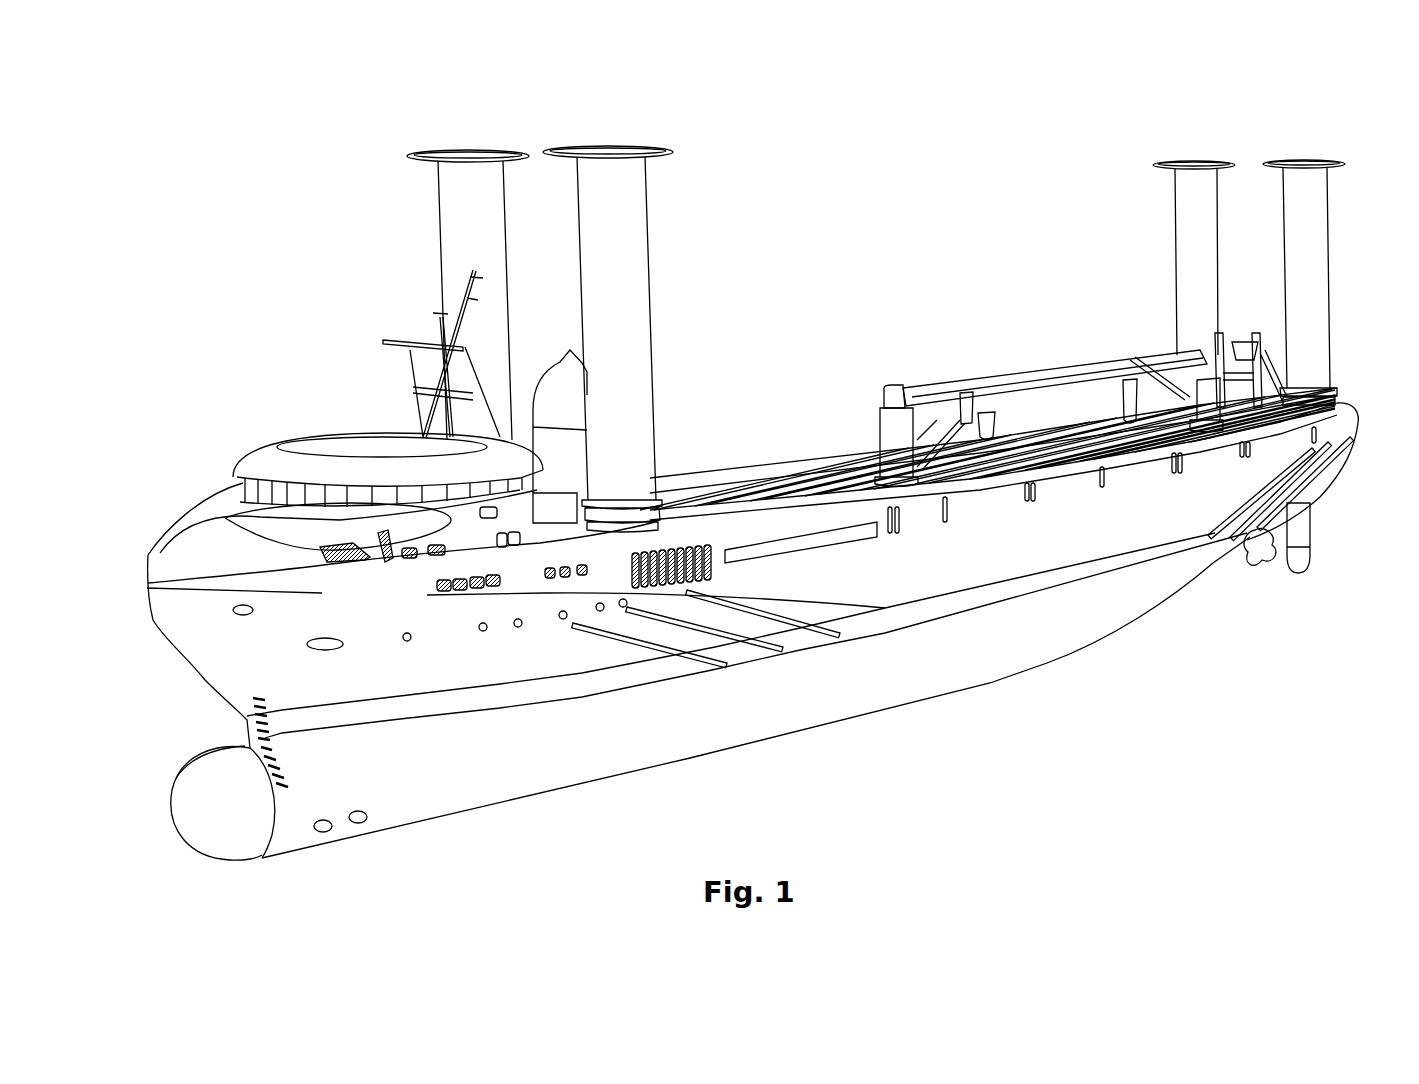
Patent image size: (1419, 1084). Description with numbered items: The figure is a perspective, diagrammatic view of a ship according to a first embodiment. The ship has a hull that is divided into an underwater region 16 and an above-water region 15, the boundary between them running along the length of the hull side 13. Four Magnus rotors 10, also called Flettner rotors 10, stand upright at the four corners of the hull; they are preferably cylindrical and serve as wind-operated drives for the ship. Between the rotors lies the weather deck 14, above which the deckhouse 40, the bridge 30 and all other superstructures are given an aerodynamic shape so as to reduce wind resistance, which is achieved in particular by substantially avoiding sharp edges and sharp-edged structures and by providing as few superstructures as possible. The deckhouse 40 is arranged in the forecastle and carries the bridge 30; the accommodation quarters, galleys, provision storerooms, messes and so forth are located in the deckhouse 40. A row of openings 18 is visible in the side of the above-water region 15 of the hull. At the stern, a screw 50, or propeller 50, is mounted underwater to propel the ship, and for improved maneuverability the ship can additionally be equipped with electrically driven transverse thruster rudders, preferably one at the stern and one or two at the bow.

The Magnus rotor 10 is at (470, 232).
The hull side shell 13 is at (913, 627).
The weather deck 14 is at (748, 480).
The above-water region 15 is at (1057, 550).
The underwater region 16 is at (870, 693).
The air outlet openings 18 is at (665, 545).
The bridge 30 is at (347, 495).
The deckhouse 40 is at (320, 570).
The propeller 50 is at (1268, 555).